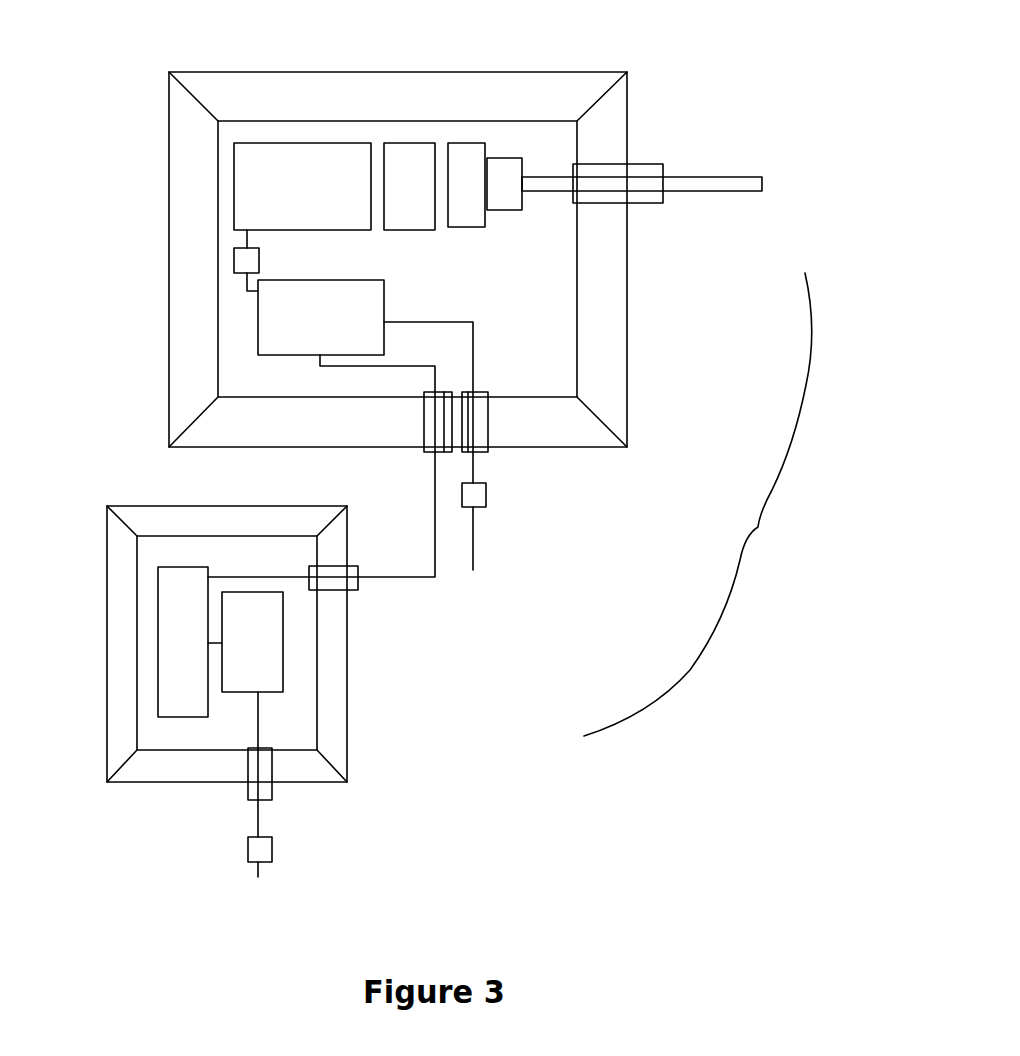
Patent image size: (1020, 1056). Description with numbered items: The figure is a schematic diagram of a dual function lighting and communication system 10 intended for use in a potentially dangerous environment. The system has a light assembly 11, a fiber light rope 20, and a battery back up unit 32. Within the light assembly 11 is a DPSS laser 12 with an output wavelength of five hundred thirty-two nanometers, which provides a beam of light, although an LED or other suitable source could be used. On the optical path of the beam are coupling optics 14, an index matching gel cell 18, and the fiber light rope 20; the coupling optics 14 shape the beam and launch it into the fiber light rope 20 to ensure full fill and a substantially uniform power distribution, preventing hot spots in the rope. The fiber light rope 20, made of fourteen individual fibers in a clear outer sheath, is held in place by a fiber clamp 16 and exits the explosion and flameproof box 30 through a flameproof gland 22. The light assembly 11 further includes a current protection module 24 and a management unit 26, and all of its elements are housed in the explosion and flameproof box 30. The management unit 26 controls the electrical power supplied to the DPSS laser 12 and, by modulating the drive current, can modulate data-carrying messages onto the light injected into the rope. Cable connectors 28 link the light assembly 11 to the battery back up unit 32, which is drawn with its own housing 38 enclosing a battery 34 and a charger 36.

The system 10 is at (698, 504).
The light assembly 11 is at (616, 504).
The DPSS laser 12 is at (278, 143).
The coupling optics 14 is at (410, 143).
The fiber clamp 16 is at (463, 143).
The index matching gel cell 18 is at (507, 210).
The fiber light rope 20 is at (744, 194).
The flameproof gland 22 is at (650, 164).
The current protection module 24 is at (234, 262).
The management unit 26 is at (262, 330).
The cable connector 28 is at (487, 492).
The explosion and flameproof box 30 is at (195, 300).
The battery back up unit 32 is at (416, 700).
The battery 34 is at (283, 637).
The charger 36 is at (158, 637).
The second housing 38 is at (155, 517).